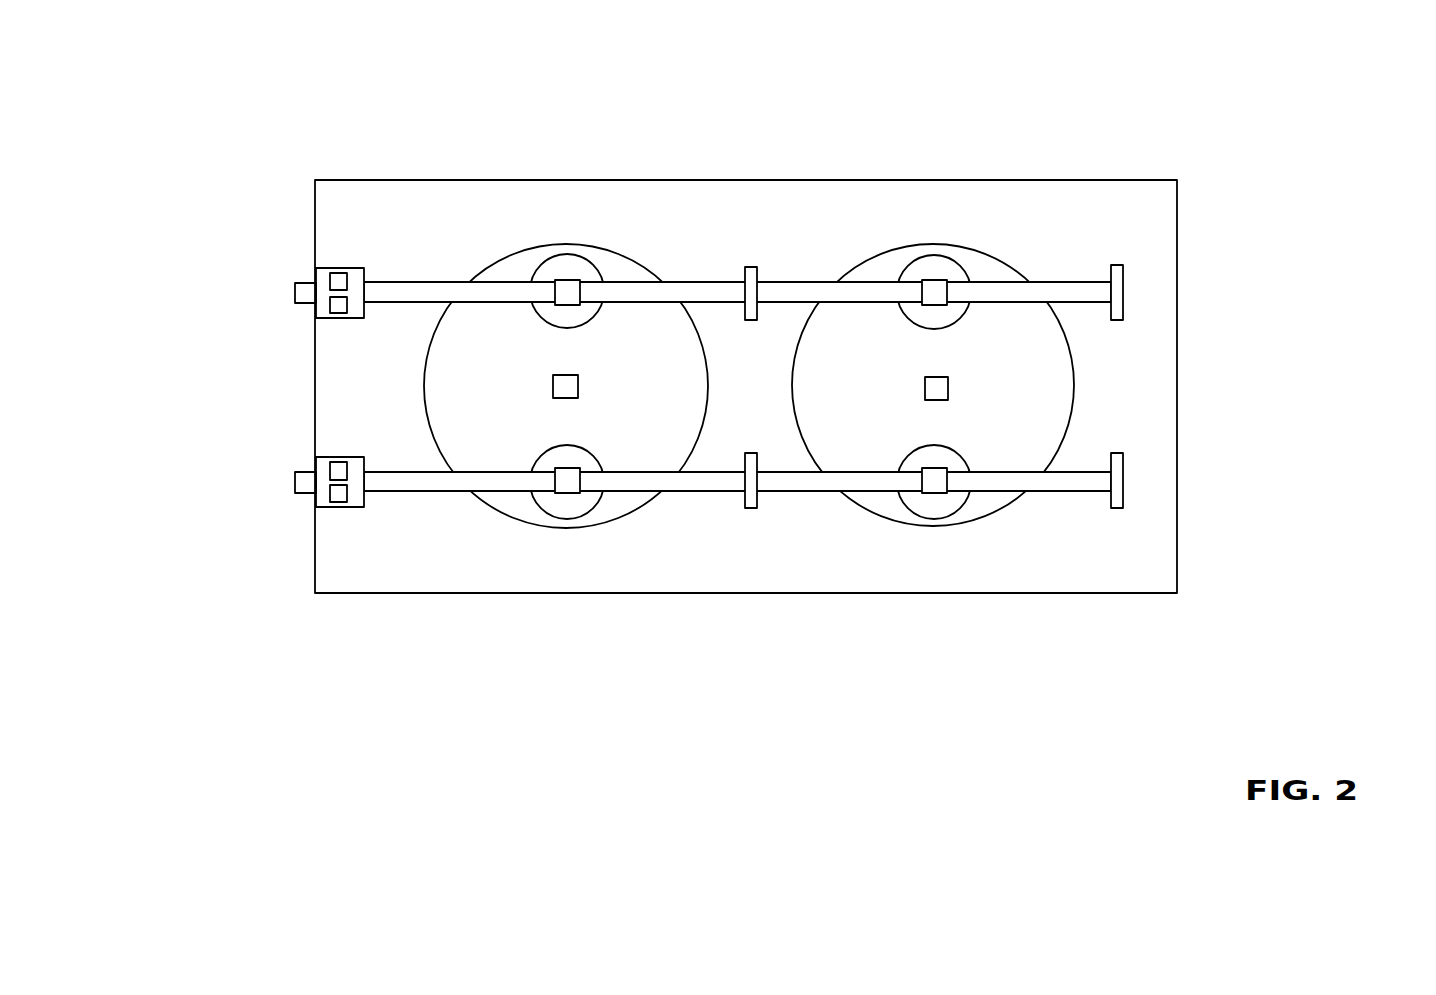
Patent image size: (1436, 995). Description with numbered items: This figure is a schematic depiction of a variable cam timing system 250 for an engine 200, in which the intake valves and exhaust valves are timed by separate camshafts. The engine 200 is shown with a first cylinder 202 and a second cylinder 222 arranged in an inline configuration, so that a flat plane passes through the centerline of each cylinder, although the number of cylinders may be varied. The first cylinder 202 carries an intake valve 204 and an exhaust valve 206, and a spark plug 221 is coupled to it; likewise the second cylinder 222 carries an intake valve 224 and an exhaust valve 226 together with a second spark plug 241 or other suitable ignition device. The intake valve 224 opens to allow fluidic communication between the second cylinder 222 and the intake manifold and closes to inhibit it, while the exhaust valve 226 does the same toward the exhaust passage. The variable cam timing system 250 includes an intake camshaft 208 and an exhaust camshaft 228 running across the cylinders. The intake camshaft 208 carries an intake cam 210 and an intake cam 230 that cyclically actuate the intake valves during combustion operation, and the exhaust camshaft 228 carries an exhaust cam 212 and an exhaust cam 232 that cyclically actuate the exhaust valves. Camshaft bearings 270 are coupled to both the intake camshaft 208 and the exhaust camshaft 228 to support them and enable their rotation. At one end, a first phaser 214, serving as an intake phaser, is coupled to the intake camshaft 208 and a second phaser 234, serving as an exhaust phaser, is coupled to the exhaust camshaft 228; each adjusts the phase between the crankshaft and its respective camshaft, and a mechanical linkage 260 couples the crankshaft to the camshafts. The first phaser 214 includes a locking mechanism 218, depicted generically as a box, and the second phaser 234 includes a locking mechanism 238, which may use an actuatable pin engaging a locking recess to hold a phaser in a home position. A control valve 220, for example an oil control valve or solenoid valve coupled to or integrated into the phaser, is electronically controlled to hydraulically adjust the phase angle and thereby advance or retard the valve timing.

The engine 200 is at (1220, 107).
The first cylinder 202 is at (620, 255).
The intake valve 204 is at (546, 325).
The exhaust valve 206 is at (543, 450).
The intake camshaft 208 is at (394, 283).
The intake cam 210 is at (567, 306).
The exhaust cam 212 is at (563, 468).
The first phaser 214 is at (333, 268).
The locking mechanism 218 is at (342, 315).
The control valve 220 is at (348, 280).
The spark plug 221 is at (553, 388).
The second cylinder 222 is at (994, 258).
The intake valve 224 is at (910, 325).
The exhaust valve 226 is at (910, 450).
The exhaust camshaft 228 is at (394, 472).
The intake cam 230 is at (934, 306).
The exhaust cam 232 is at (934, 468).
The second phaser 234 is at (333, 457).
The locking mechanism 238 is at (342, 503).
The second spark plug 241 is at (925, 388).
The variable cam timing system 250 is at (193, 387).
The mechanical linkage 260 is at (312, 283).
The camshaft bearings 270 is at (750, 267).